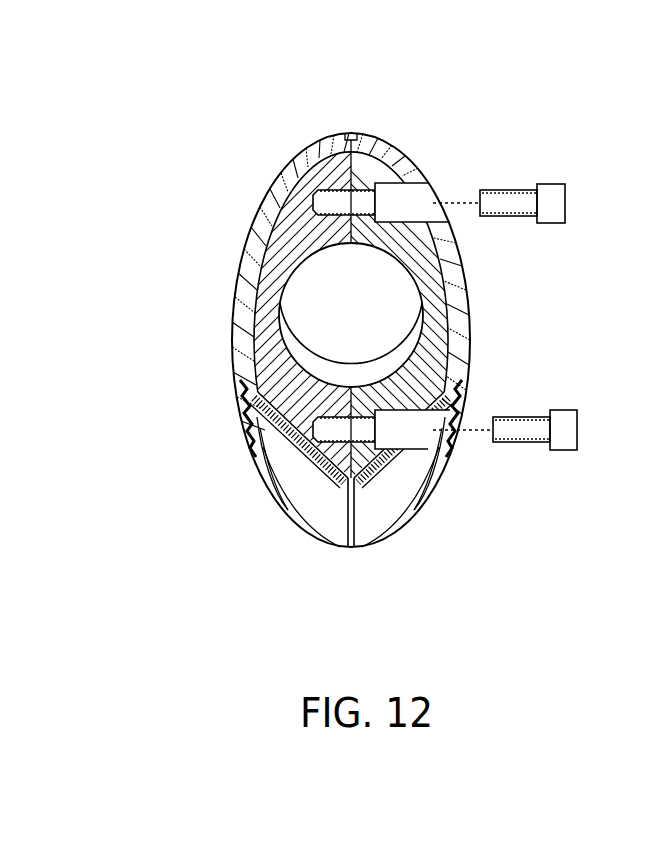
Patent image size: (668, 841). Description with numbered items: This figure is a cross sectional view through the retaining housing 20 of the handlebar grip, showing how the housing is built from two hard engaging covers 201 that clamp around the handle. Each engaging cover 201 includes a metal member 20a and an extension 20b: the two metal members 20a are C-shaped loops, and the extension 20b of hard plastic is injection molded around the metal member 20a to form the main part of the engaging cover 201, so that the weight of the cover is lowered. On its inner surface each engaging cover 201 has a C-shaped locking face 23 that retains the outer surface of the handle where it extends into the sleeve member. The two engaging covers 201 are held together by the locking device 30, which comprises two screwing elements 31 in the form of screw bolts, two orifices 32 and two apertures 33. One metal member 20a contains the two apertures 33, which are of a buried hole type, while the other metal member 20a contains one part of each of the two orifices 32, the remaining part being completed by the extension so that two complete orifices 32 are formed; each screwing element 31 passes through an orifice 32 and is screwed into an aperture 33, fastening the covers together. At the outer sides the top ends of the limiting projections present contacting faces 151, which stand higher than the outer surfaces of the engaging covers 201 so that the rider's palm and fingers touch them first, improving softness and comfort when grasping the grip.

The retaining housing 20 is at (259, 196).
The engaging cover 201 is at (145, 175).
The metal member 20a is at (276, 287).
The extension 20b is at (248, 243).
The C-shaped locking face 23 is at (307, 323).
The locking device 30 is at (560, 171).
The screwing element 31 is at (507, 190).
The orifice 32 is at (397, 202).
The aperture 33 is at (330, 200).
The contacting face 151 is at (255, 445).